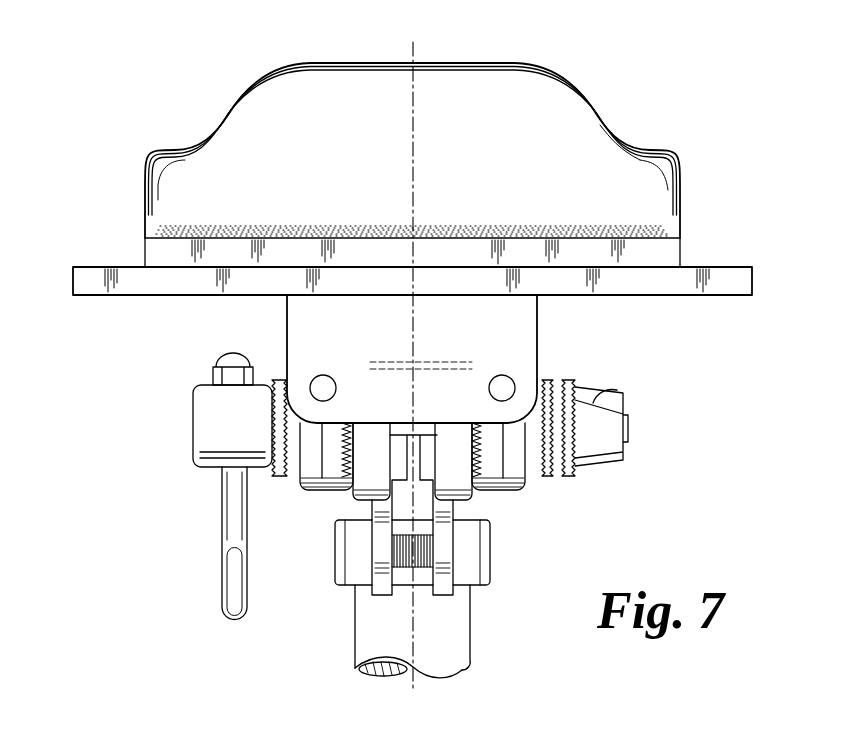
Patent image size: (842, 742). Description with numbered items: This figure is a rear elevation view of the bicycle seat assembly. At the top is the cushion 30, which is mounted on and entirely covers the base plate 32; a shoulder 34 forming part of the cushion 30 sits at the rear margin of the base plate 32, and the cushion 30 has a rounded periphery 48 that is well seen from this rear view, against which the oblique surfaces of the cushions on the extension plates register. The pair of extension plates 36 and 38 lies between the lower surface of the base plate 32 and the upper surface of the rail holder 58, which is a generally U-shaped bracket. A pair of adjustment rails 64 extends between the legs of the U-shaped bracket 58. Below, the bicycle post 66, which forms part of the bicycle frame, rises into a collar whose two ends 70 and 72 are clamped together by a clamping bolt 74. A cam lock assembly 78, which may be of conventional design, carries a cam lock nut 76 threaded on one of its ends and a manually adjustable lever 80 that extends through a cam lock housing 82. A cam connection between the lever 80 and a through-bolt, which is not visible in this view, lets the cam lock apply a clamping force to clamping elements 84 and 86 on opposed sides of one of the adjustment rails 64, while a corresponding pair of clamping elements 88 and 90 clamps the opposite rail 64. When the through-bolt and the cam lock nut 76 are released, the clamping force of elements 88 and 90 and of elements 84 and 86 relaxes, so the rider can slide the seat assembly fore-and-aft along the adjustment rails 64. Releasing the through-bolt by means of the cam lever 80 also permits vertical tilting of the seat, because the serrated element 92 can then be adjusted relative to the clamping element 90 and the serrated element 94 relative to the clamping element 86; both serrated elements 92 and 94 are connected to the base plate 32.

The cushion 30 is at (542, 153).
The base plate 32 is at (647, 255).
The shoulder 34 is at (488, 93).
The extension plate 36 is at (693, 278).
The extension plate 38 is at (112, 270).
The rounded periphery 48 is at (677, 185).
The rail holder 58 is at (530, 350).
The adjustment rails 64 is at (318, 386).
The bicycle post 66 is at (458, 648).
The collar end 70 is at (347, 583).
The collar end 72 is at (452, 527).
The clamping bolt 74 is at (380, 440).
The cam lock nut 76 is at (618, 388).
The cam lock assembly 78 is at (246, 429).
The manually adjustable lever 80 is at (220, 540).
The cam lock housing 82 is at (203, 468).
The clamping element 84 is at (513, 457).
The clamping element 86 is at (490, 440).
The clamping element 88 is at (300, 483).
The clamping element 90 is at (332, 467).
The serrated element 92 is at (343, 463).
The serrated element 94 is at (476, 440).